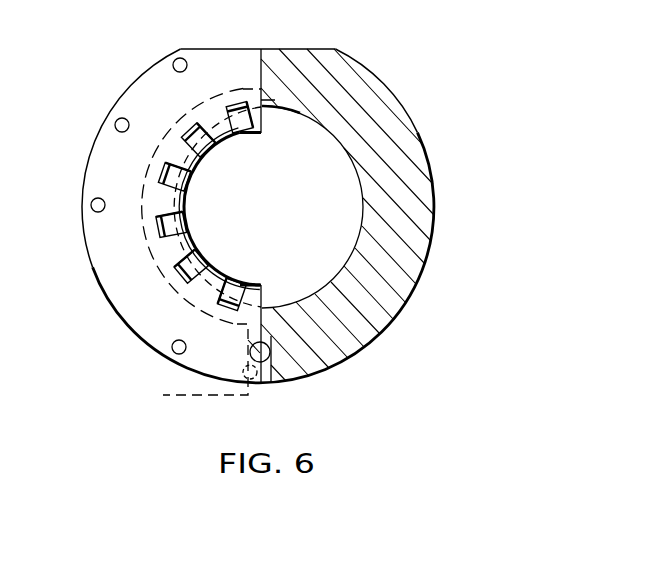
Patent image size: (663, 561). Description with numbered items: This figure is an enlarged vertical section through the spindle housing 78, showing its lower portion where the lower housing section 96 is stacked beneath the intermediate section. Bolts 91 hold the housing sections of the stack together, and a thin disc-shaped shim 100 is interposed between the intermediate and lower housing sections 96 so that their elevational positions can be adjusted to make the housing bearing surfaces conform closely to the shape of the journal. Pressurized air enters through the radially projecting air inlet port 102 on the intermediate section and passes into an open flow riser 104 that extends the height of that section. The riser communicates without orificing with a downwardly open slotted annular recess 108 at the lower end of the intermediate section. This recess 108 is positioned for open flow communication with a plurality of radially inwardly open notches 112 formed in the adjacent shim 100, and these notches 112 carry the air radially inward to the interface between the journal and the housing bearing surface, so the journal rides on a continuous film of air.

The spindle housing 78 is at (437, 186).
The bolts 91 is at (181, 58).
The lower housing section 96 is at (413, 255).
The shim 100 is at (251, 63).
The air inlet port 102 is at (185, 251).
The flow riser 104 is at (268, 362).
The slotted annular recess 108 is at (240, 134).
The notches 112 is at (170, 231).